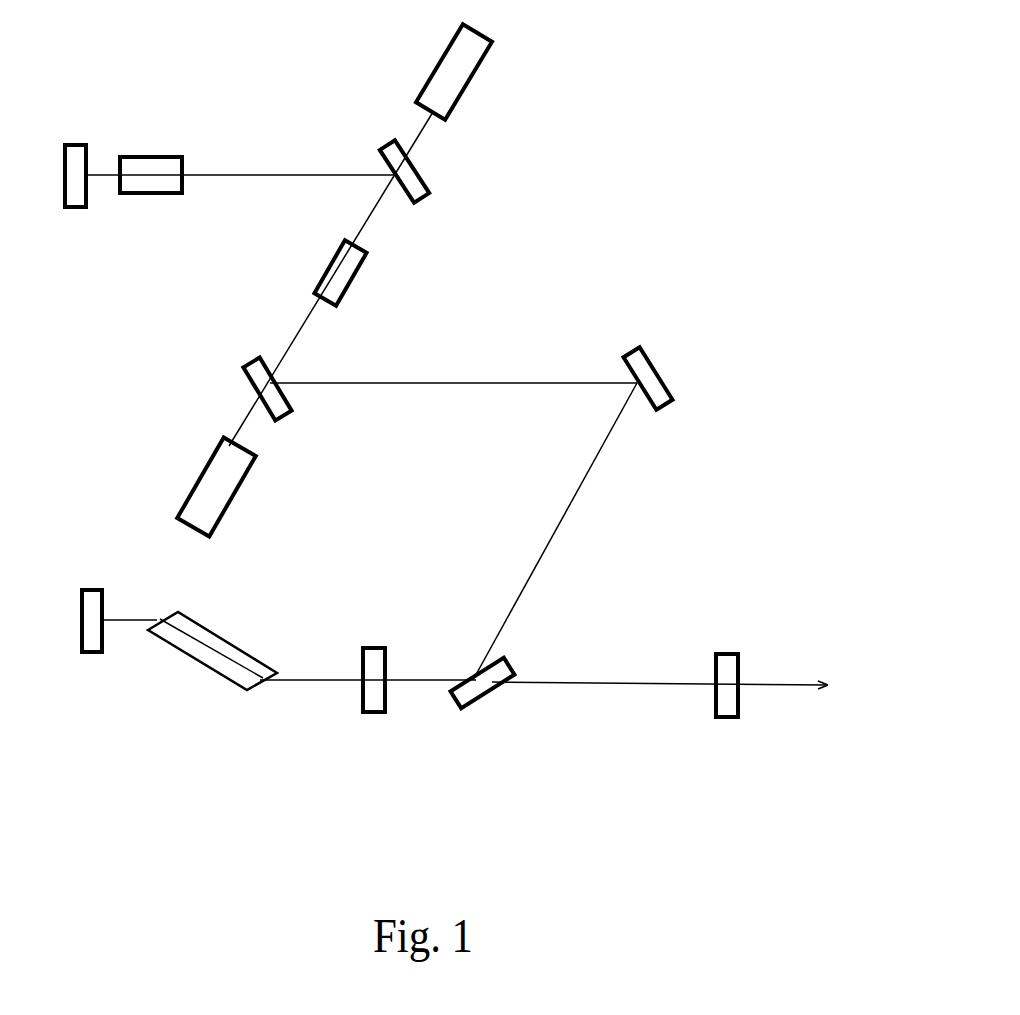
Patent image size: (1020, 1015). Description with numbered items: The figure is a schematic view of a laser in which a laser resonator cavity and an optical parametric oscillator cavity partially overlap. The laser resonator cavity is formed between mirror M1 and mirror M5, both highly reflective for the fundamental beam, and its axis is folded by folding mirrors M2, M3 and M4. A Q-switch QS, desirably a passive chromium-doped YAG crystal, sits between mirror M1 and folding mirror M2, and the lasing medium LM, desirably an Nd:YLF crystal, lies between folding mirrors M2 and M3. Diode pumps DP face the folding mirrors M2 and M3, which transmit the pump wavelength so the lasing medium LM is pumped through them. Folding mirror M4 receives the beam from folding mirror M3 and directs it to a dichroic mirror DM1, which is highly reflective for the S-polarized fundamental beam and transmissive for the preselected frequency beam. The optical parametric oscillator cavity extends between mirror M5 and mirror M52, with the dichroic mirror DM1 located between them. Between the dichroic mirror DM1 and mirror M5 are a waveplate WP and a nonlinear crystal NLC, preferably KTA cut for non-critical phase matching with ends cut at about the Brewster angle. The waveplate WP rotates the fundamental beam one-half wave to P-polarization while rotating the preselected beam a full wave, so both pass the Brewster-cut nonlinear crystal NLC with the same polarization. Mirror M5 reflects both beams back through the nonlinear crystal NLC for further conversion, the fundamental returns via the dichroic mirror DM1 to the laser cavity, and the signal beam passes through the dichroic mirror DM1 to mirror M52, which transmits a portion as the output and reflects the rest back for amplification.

The mirror M1 is at (58, 154).
The Q-switch QS is at (151, 147).
The diode pumps DP is at (306, 273).
The folding mirror M2 is at (435, 180).
The lasing medium LM is at (309, 272).
The folding mirror M3 is at (237, 384).
The folding mirror M4 is at (671, 378).
The mirror M5 is at (105, 644).
The nonlinear crystal NLC is at (212, 687).
The waveplate WP is at (370, 703).
The dichroic mirror DM1 is at (477, 708).
The mirror M52 is at (716, 708).